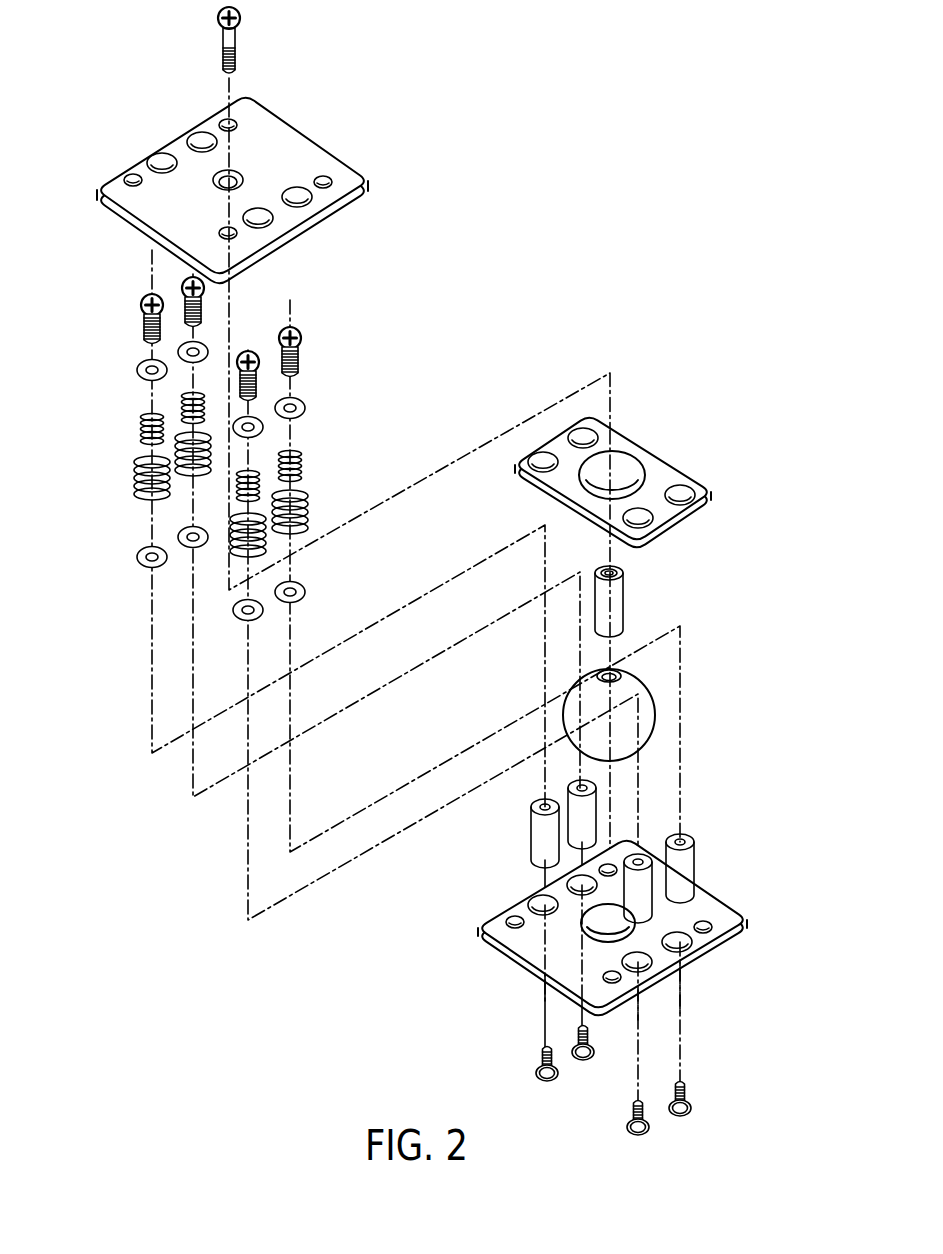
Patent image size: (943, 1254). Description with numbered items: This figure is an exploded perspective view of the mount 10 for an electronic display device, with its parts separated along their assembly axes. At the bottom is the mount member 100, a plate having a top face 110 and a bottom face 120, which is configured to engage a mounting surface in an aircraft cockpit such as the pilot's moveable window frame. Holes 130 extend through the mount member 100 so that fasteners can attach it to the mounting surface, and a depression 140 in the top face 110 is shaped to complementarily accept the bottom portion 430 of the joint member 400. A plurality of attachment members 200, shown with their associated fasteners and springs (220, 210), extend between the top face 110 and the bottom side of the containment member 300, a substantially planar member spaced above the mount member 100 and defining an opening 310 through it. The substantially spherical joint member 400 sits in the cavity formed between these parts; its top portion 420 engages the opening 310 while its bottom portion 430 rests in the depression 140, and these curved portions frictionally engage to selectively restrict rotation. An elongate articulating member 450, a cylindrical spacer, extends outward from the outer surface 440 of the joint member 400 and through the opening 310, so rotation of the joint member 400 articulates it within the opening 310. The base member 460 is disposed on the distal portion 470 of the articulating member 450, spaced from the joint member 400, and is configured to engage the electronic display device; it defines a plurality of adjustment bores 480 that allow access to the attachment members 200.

The mount 10 is at (647, 353).
The mount member 100 is at (612, 926).
The top face 110 is at (703, 897).
The bottom face 120 is at (712, 958).
The holes 130 is at (605, 977).
The depression 140 is at (593, 927).
The attachment members 200 is at (143, 327).
The spring 210 is at (302, 462).
The screw 220 is at (300, 357).
The containment member 300 is at (665, 464).
The opening 310 is at (617, 468).
The joint member 400 is at (644, 701).
The top portion 420 is at (626, 675).
The bottom portion 430 is at (657, 735).
The outer surface 440 is at (657, 710).
The elongate articulating member 450 is at (623, 607).
The base member 460 is at (323, 135).
The distal portion 470 is at (620, 575).
The adjustment bores 480 is at (161, 162).